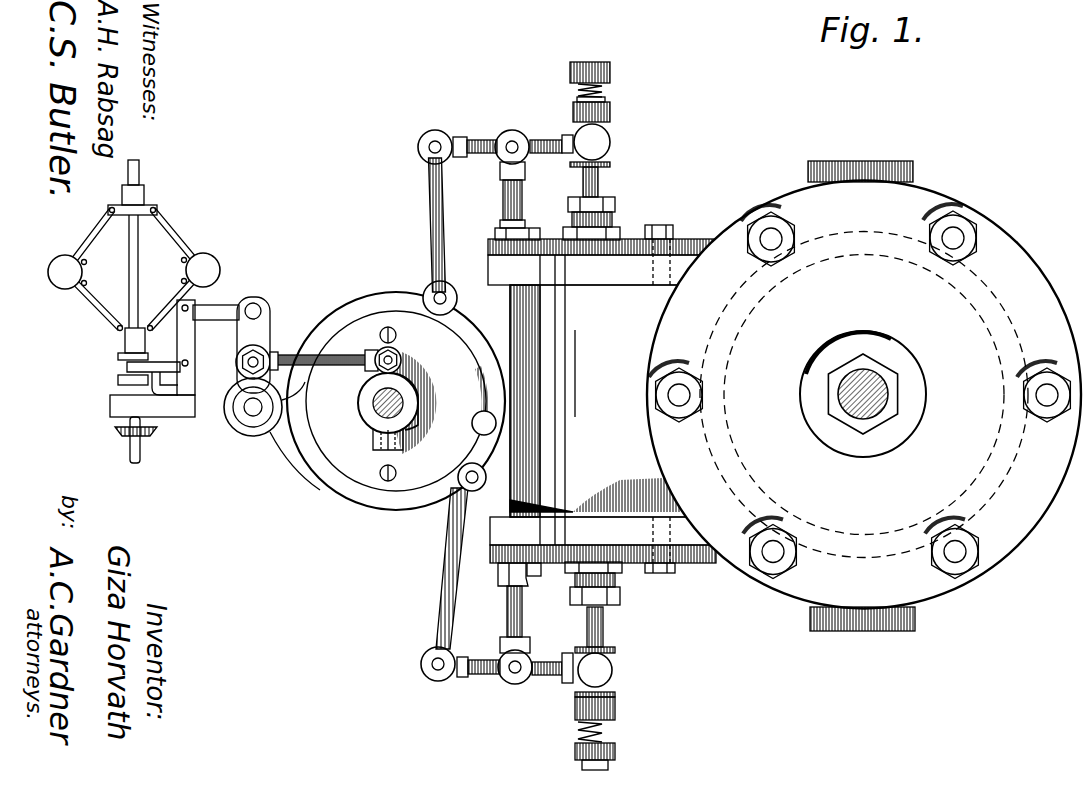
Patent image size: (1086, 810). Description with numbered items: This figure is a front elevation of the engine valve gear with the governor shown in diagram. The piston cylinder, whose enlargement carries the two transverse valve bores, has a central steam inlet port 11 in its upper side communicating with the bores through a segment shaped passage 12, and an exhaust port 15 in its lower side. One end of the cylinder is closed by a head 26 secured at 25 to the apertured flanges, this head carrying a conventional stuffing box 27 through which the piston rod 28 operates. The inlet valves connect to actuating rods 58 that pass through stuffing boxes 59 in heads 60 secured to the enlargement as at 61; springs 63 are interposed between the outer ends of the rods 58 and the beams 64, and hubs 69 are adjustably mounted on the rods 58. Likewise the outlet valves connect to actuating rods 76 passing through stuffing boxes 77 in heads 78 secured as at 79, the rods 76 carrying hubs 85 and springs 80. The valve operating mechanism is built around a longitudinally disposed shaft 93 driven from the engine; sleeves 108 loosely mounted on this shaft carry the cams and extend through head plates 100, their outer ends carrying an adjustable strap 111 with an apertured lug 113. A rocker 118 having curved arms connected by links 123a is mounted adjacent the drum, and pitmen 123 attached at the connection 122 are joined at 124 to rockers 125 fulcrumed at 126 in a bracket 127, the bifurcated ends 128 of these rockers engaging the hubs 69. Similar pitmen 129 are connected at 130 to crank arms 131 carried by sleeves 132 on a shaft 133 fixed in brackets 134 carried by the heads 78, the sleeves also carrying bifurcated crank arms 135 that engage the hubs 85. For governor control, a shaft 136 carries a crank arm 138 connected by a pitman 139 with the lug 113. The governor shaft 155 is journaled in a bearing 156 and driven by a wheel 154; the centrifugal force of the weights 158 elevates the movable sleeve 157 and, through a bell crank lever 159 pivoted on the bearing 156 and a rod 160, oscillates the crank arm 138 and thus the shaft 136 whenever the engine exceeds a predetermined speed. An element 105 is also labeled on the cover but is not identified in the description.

The steam inlet port 11 is at (866, 161).
The segment shaped passage 12 is at (597, 390).
The exhaust port 15 is at (866, 631).
The securing means 25 is at (703, 394).
The head 26 is at (864, 395).
The stuffing box 27 is at (867, 351).
The piston rod 28 is at (861, 404).
The actuating rods 58 is at (600, 183).
The stuffing boxes 59 is at (614, 205).
The heads 60 is at (676, 238).
The securing means 61 is at (530, 227).
The springs 63 is at (604, 92).
The beams 64 is at (598, 62).
The hubs 69 is at (610, 132).
The actuating rods 76 is at (603, 625).
The stuffing boxes 77 is at (622, 596).
The heads 78 is at (705, 562).
The securing means 79 is at (536, 577).
The springs 80 is at (612, 736).
The hubs 85 is at (614, 652).
The shaft 93 is at (378, 410).
The head plates 100 is at (403, 440).
The boss 105 is at (473, 423).
The sleeves 108 is at (411, 447).
The adjustable strap 111 is at (420, 397).
The apertured lugs 113 is at (398, 346).
The rocker 118 is at (385, 498).
The connection 122 is at (445, 294).
The pitmen 123 is at (430, 205).
The links 123a is at (500, 376).
The connection 124 is at (432, 147).
The rockers 125 is at (478, 156).
The fulcrum 126 is at (511, 132).
The bracket 127 is at (502, 203).
The bifurcated ends 128 is at (566, 136).
The rod 129 is at (448, 556).
The connection 130 is at (420, 663).
The crank arms 131 is at (480, 658).
The sleeves 132 is at (503, 678).
The shaft 133 is at (516, 674).
The brackets 134 is at (506, 601).
The bifurcated crank arms 135 is at (566, 660).
The shaft 136 is at (253, 412).
The crank arm 138 is at (258, 328).
The pitmen 139 is at (323, 368).
The wheel 154 is at (152, 433).
The governor shaft 155 is at (140, 271).
The bearing 156 is at (112, 407).
The movable sleeve 157 is at (124, 345).
The weights 158 is at (48, 272).
The bell crank lever 159 is at (125, 369).
The rod 160 is at (218, 306).